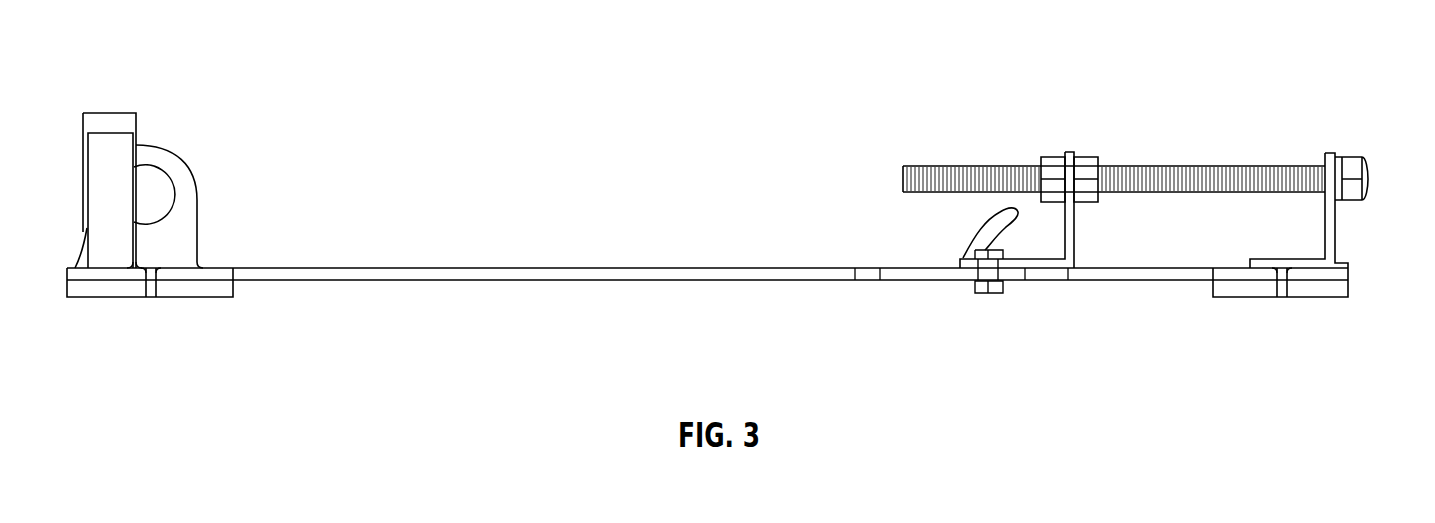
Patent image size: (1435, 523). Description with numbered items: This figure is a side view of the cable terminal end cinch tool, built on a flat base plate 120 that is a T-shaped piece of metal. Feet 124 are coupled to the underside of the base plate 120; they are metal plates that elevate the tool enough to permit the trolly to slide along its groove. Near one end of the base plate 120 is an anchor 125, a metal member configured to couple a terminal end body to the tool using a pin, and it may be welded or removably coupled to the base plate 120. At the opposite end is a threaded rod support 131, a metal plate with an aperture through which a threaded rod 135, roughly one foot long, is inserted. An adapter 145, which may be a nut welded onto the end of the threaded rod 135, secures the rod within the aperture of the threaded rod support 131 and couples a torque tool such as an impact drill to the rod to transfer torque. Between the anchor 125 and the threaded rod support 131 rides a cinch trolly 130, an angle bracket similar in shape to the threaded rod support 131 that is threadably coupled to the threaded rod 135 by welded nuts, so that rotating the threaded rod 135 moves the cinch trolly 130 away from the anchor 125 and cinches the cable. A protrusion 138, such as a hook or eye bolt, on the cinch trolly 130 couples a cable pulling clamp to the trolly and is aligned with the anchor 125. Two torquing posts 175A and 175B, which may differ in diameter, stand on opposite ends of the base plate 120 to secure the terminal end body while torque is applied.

The base plate 120 is at (570, 268).
The feet 124 is at (100, 288).
The anchor 125 is at (198, 196).
The cinch trolly 130 is at (1047, 260).
The threaded rod support 131 is at (1323, 246).
The threaded rod 135 is at (1210, 166).
The protrusion 138 is at (962, 254).
The adapter 145 is at (1350, 200).
The torquing post 175A is at (117, 133).
The torquing post 175B is at (101, 112).